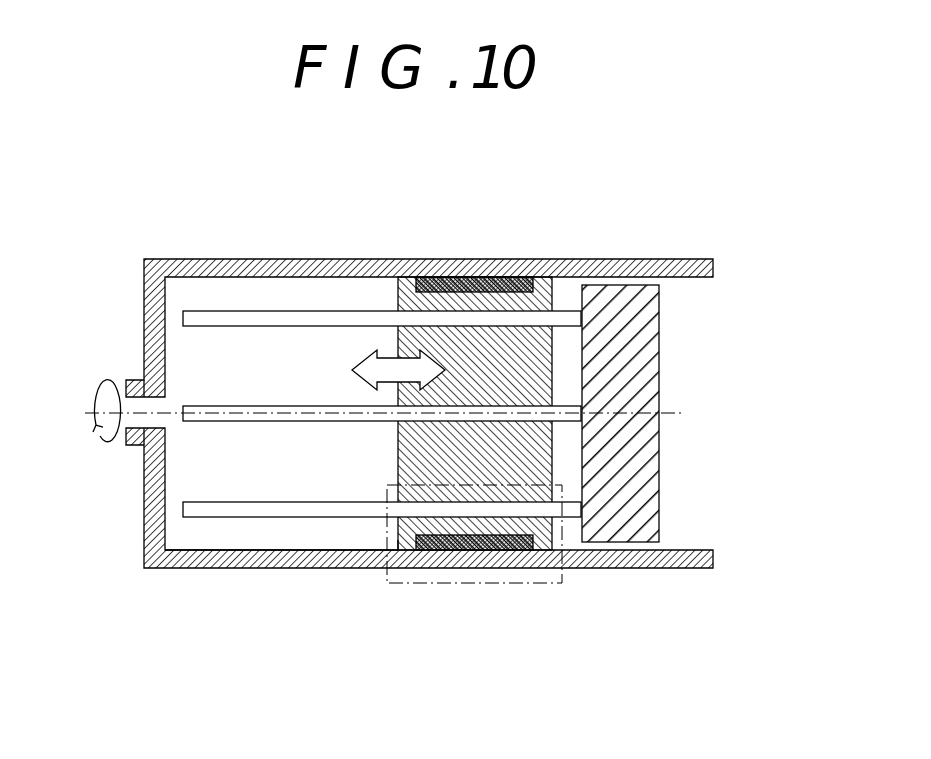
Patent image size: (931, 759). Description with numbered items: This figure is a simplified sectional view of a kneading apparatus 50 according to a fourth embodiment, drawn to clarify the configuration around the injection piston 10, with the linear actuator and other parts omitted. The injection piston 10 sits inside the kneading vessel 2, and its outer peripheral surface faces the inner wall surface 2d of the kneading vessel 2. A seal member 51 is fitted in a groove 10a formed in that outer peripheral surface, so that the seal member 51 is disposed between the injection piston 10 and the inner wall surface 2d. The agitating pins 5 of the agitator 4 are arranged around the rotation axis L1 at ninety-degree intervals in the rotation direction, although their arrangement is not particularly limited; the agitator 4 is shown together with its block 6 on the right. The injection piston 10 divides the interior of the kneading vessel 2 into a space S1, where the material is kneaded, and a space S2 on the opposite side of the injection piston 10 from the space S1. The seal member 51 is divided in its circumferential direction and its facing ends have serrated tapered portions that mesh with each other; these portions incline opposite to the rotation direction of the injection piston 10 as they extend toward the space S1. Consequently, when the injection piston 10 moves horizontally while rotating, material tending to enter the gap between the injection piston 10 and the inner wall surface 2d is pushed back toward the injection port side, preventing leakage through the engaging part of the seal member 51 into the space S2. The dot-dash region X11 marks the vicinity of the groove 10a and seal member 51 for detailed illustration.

The kneading apparatus 50 is at (396, 395).
The kneading vessel 2 is at (254, 571).
The inner wall surface 2d is at (203, 541).
The injection piston 10 is at (397, 458).
The groove 10a is at (405, 545).
The seal member 51 is at (463, 292).
The agitator 4 is at (424, 353).
The agitating pins 5 is at (562, 318).
The shaft holding block 6 is at (565, 212).
The region X11 is at (568, 578).
The rotation axis L1 is at (371, 411).
The space S1 is at (300, 478).
The space S2 is at (712, 491).